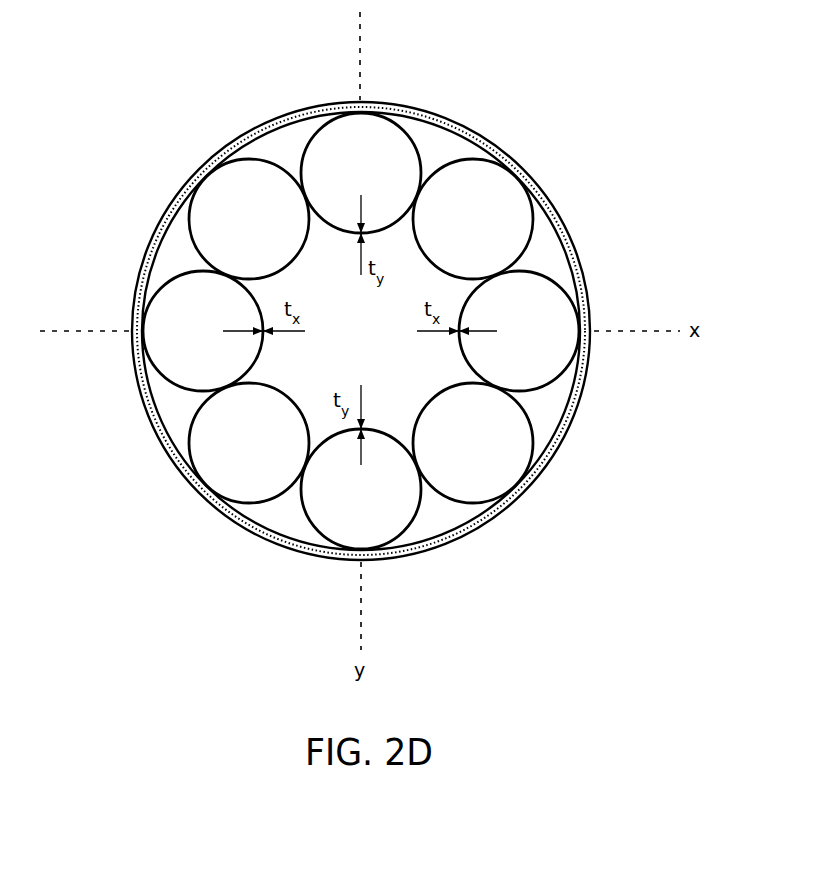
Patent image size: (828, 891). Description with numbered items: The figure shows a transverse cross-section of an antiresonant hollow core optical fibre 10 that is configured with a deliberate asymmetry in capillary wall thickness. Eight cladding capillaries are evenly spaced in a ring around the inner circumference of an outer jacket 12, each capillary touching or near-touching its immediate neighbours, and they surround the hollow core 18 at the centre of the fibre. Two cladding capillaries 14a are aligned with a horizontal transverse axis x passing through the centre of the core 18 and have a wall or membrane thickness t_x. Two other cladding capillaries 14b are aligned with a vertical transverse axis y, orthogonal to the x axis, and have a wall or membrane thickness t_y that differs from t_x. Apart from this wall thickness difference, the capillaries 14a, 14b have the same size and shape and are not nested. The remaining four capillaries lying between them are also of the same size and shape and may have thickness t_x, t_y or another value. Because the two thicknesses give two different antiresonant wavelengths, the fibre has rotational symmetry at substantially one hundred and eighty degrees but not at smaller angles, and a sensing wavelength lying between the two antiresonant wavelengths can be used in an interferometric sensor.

The catheter / multi-lumen tubing assembly 10 is at (419, 329).
The outer jacket 12 is at (567, 432).
The cladding capillaries 14a is at (543, 275).
The cladding capillaries 14b is at (415, 140).
The core 18 is at (377, 349).